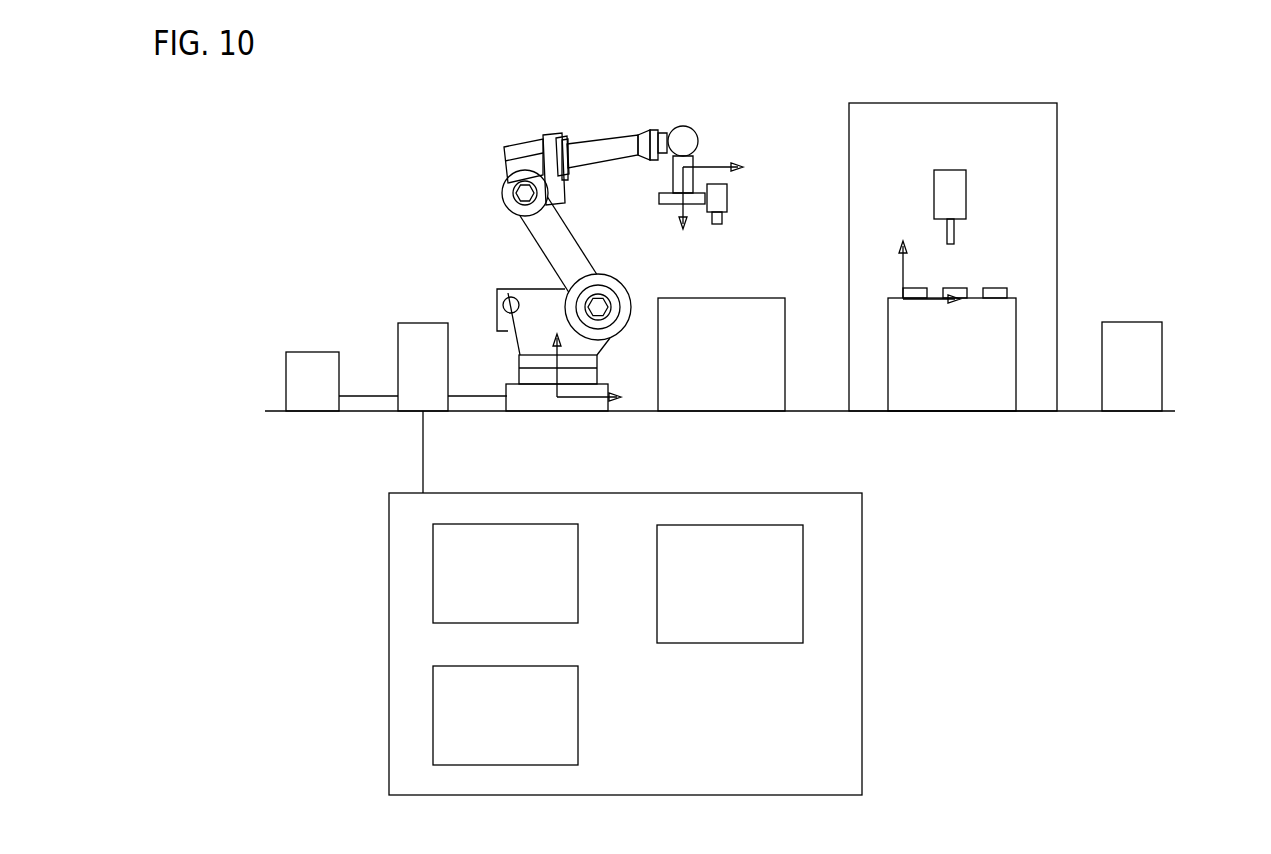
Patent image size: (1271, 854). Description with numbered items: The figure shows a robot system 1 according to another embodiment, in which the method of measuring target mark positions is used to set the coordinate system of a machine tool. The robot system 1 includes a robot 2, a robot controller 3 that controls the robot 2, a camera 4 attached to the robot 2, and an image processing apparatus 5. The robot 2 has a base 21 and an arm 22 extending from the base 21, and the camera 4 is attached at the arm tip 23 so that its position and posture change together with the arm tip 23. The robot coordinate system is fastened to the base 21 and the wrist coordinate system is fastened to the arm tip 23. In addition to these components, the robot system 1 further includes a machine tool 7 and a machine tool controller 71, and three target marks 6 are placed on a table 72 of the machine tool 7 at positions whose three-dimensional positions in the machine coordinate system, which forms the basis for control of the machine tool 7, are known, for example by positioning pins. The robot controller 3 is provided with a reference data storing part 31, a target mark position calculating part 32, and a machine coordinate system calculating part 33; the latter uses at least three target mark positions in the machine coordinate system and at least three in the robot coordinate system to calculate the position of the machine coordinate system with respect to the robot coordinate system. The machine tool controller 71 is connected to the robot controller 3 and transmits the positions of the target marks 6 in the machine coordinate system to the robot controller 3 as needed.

The robot system 1 is at (320, 56).
The robot 2 is at (485, 128).
The robot controller 3 is at (425, 323).
The camera 4 is at (729, 197).
The image processing apparatus 5 is at (290, 352).
The target mark 6 is at (917, 288).
The machine tool 7 is at (972, 103).
The base 21 is at (522, 414).
The arm 22 is at (592, 140).
The arm tip 23 is at (673, 170).
The reference data storing part 31 is at (433, 563).
The target mark position calculating part 32 is at (433, 688).
The machine coordinate system calculating part 33 is at (805, 575).
The machine tool controller 71 is at (1137, 322).
The table 72 is at (1010, 289).